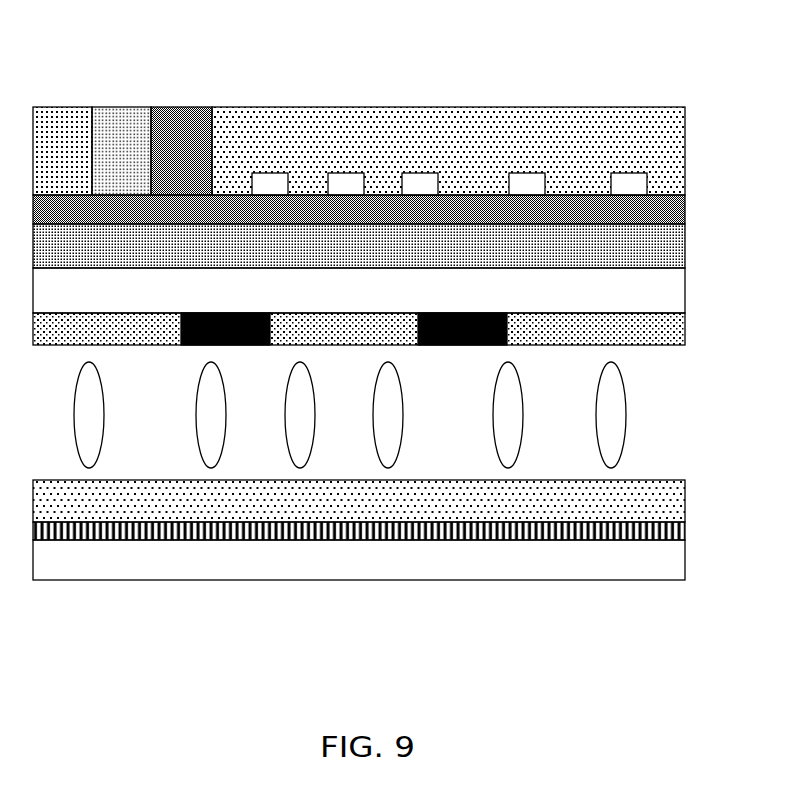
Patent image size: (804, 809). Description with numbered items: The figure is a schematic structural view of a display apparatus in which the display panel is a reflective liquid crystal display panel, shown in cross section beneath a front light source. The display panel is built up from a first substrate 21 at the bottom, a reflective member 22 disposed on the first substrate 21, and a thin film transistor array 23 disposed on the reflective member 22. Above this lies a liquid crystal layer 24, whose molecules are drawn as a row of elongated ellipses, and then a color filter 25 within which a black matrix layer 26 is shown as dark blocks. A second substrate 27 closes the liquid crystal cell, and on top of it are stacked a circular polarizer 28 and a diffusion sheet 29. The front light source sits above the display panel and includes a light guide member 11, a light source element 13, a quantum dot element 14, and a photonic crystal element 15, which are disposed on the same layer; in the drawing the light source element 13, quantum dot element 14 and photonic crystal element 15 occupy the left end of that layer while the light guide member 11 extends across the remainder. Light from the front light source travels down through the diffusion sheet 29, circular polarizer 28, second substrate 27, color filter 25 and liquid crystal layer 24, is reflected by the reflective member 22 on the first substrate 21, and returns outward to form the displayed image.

The light guide member 11 is at (448, 106).
The light source element 13 is at (70, 106).
The quantum dot element 14 is at (137, 106).
The photonic crystal element 15 is at (195, 106).
The first substrate 21 is at (359, 620).
The reflective member 22 is at (359, 611).
The thin film transistor array 23 is at (359, 590).
The liquid crystal layer 24 is at (350, 531).
The color filter 25 is at (359, 506).
The black matrix layer 26 is at (344, 506).
The second substrate 27 is at (359, 165).
The circular polarizer 28 is at (359, 143).
The diffusion sheet 29 is at (359, 121).